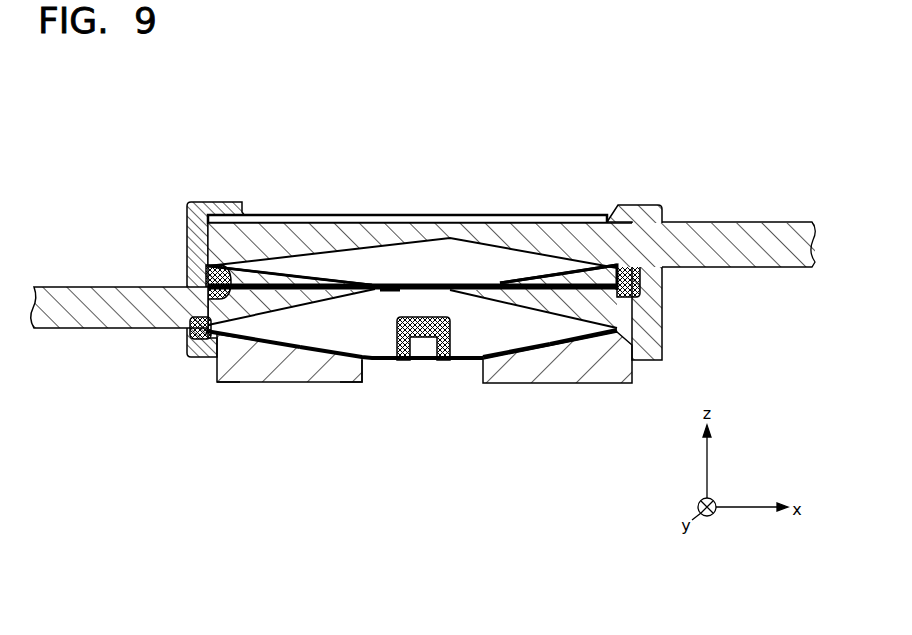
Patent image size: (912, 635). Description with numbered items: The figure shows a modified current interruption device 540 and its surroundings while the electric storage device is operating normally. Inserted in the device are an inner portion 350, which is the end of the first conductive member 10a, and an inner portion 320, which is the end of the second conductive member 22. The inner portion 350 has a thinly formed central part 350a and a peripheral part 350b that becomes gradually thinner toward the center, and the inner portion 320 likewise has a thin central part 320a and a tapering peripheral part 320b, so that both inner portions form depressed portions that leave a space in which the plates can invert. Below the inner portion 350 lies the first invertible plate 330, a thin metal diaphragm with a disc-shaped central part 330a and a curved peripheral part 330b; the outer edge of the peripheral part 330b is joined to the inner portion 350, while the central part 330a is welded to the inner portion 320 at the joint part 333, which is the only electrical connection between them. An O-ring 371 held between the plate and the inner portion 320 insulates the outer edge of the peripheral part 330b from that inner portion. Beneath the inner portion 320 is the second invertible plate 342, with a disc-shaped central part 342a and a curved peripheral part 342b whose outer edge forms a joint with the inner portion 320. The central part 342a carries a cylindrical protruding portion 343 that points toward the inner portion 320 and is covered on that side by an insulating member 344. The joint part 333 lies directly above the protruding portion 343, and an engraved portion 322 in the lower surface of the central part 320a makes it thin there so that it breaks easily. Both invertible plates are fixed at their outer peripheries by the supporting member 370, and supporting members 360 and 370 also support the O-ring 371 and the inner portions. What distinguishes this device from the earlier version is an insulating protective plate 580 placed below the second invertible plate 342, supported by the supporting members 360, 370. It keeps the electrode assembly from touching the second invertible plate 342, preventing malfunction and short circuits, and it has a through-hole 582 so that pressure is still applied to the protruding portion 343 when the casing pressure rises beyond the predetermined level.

The current interruption device 540 is at (198, 172).
The supporting member 360 is at (266, 212).
The first conductive member 10a is at (733, 222).
The inner portion 350 is at (300, 179).
The central part 350a is at (346, 201).
The peripheral part 350b is at (303, 236).
The first invertible plate 330 is at (565, 181).
The central part 330a is at (503, 250).
The peripheral part 330b is at (592, 262).
The joint part 333 is at (422, 282).
The O-ring 371 is at (192, 282).
The second conductive member 22 is at (73, 320).
The supporting member 370 is at (205, 355).
The inner portion 320 is at (303, 390).
The central part 320a is at (360, 348).
The peripheral part 320b is at (290, 338).
The protective plate 580 is at (230, 383).
The through-hole 582 is at (373, 385).
The engraved portion 322 is at (388, 293).
The protruding portion 343 is at (422, 362).
The insulating member 344 is at (452, 298).
The second invertible plate 342 is at (541, 390).
The central part 342a is at (474, 358).
The peripheral part 342b is at (583, 389).